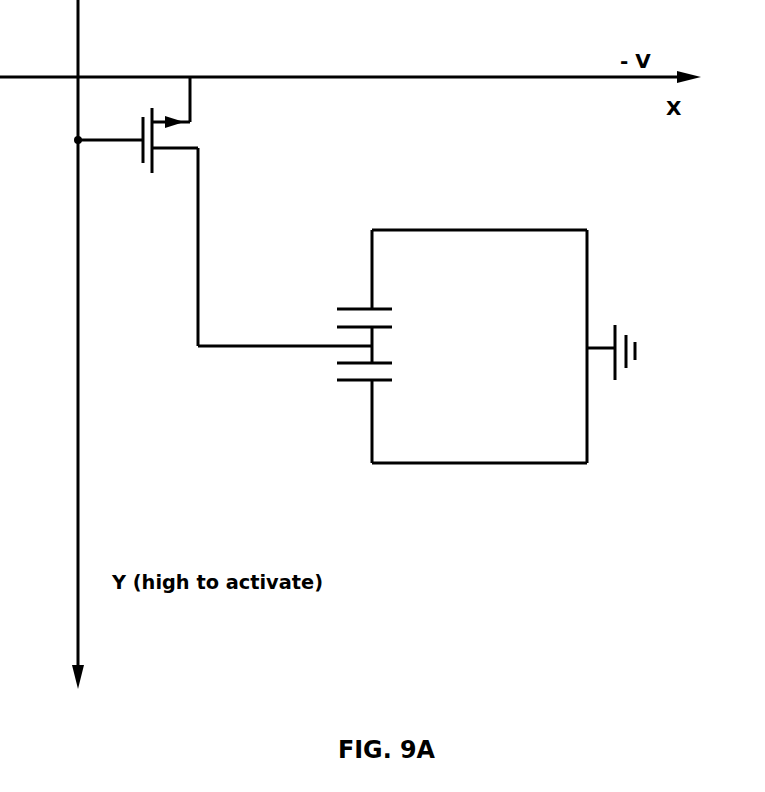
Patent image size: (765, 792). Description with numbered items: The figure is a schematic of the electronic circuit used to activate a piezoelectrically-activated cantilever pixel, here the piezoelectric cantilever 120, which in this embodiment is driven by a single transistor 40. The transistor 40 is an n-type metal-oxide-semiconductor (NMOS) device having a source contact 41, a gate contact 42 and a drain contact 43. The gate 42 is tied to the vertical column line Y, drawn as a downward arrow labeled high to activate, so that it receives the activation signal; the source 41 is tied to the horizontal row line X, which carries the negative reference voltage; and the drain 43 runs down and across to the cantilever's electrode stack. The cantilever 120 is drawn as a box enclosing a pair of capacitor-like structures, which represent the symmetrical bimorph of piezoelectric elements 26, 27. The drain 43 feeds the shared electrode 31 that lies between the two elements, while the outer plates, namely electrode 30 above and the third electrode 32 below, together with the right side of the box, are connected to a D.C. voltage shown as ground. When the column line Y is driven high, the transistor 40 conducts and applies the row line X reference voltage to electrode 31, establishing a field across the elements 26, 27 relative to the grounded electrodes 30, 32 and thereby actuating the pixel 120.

The first capacitor 26 is at (379, 323).
The second piezoelectric element 27 is at (394, 411).
The first electrode 30 is at (352, 309).
The second electrode 31 is at (385, 327).
The third electrode 32 is at (355, 382).
The transistor 40 is at (223, 211).
The source contact 41 is at (190, 98).
The gate contact 42 is at (125, 141).
The drain contact 43 is at (197, 184).
The piezoelectric cantilever 120 is at (426, 359).